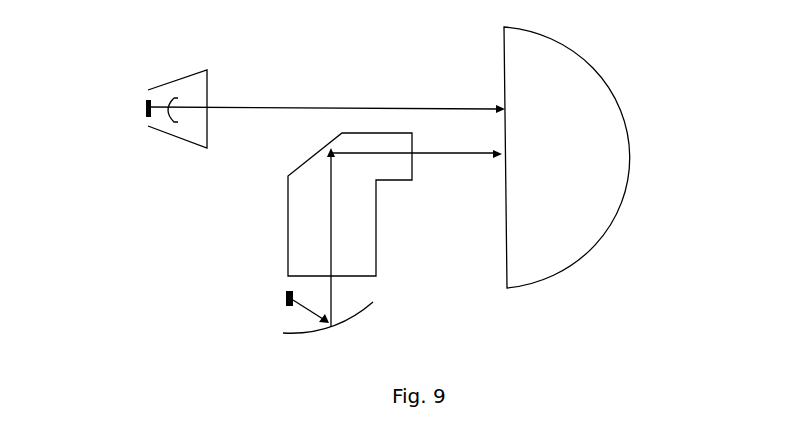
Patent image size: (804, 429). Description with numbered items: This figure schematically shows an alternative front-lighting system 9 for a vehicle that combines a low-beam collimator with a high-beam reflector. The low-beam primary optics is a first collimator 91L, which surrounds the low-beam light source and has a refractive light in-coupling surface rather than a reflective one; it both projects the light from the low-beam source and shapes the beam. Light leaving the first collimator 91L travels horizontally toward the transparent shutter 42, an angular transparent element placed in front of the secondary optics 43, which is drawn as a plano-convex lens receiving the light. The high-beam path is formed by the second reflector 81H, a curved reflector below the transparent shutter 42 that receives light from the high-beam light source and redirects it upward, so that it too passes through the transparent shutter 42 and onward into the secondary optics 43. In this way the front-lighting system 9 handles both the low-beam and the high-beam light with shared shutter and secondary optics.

The front-lighting system 9 is at (349, 184).
The first collimator 91L is at (286, 88).
The transparent shutter 42 is at (375, 230).
The secondary optics 43 is at (540, 157).
The second reflector 81H is at (319, 315).